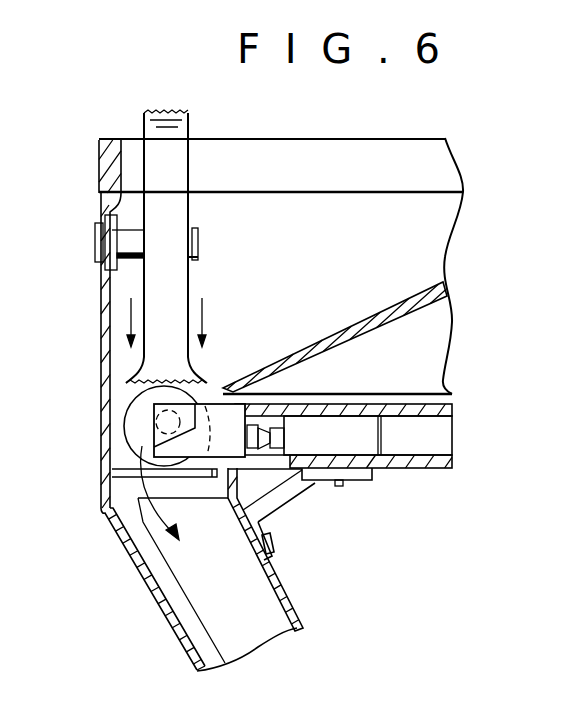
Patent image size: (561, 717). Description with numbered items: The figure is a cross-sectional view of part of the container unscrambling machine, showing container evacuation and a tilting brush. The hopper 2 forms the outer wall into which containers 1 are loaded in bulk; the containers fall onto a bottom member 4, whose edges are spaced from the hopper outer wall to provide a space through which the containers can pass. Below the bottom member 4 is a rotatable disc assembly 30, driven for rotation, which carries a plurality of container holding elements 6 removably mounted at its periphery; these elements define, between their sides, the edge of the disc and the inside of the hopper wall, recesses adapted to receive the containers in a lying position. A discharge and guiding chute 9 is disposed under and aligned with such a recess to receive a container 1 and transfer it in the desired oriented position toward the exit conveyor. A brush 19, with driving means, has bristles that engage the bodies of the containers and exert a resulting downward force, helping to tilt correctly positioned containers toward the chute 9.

The container 1 is at (132, 422).
The hopper 2 is at (103, 362).
The bottom member 4 is at (357, 322).
The container holding element 6 is at (210, 452).
The discharge and guiding chute 9 is at (198, 605).
The brush 19 is at (157, 278).
The rotatable disc assembly 30 is at (410, 470).